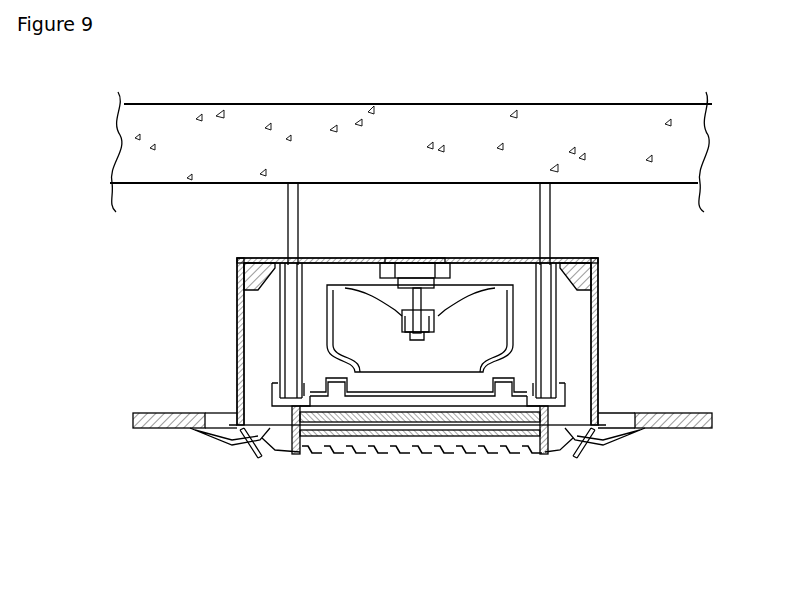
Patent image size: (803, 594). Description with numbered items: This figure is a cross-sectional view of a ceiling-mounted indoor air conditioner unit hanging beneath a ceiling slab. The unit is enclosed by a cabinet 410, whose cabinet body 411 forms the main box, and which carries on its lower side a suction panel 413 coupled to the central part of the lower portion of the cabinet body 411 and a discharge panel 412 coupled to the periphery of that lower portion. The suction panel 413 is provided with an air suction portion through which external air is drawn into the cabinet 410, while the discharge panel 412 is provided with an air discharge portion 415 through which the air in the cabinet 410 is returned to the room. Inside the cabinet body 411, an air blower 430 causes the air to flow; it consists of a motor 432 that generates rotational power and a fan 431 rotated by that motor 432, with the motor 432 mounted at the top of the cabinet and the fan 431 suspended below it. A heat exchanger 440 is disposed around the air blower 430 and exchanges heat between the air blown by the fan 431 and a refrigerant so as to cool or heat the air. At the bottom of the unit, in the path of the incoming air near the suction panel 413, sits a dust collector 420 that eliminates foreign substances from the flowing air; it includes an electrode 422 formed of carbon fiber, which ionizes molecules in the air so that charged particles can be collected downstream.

The cabinet 410 is at (603, 258).
The cabinet body 411 is at (243, 269).
The discharge panel 412 is at (567, 452).
The suction panel 413 is at (330, 456).
The air discharge portion 415 is at (612, 453).
The dust collector 420 is at (452, 447).
The electrode 422 is at (300, 456).
The air blower 430 is at (420, 283).
The fan 431 is at (465, 263).
The motor 432 is at (406, 260).
The heat exchanger 440 is at (560, 323).